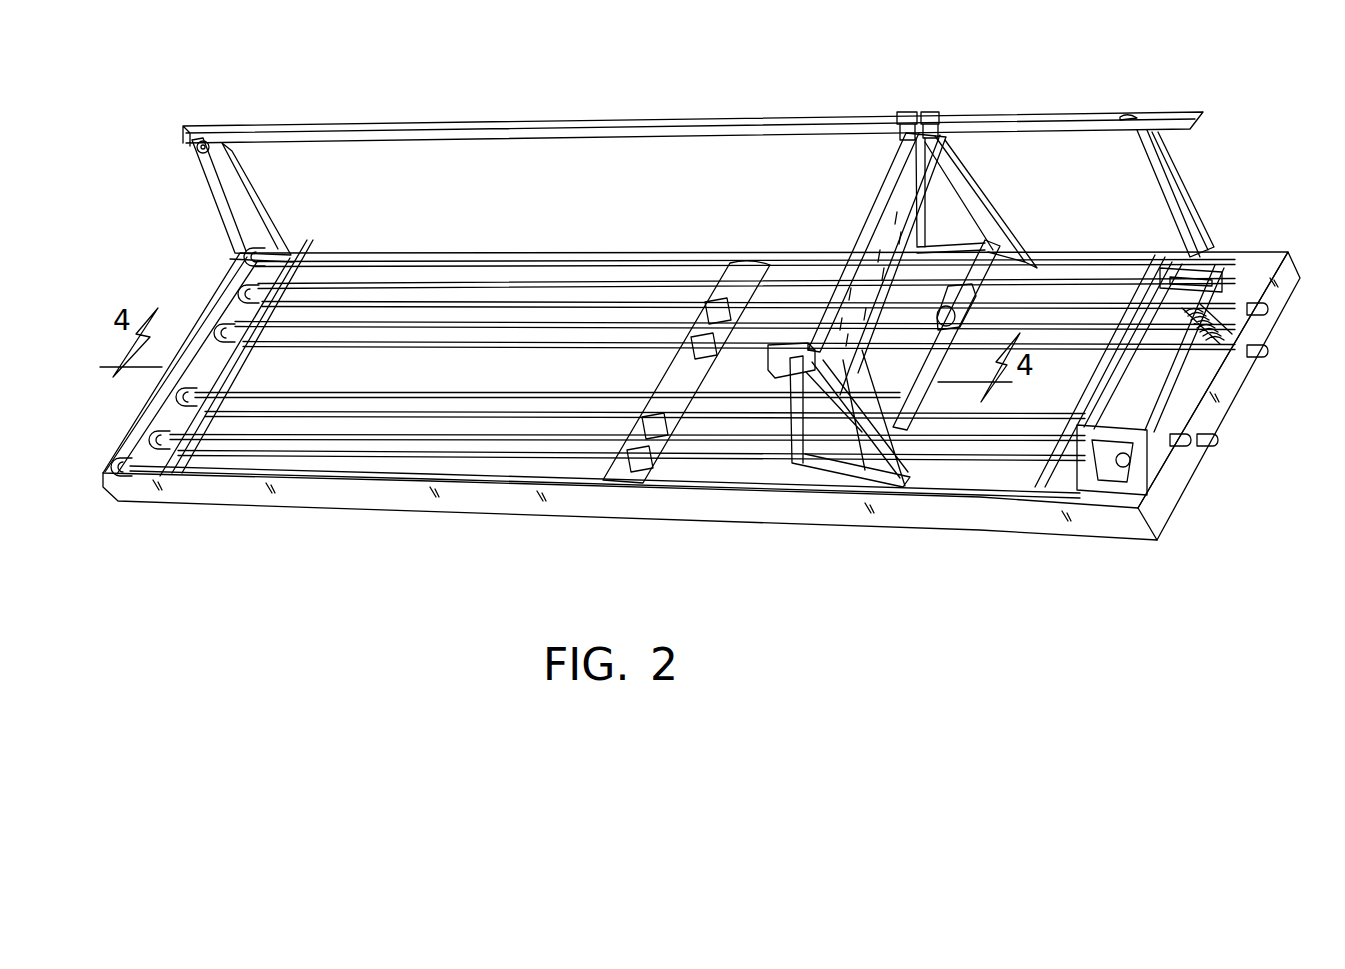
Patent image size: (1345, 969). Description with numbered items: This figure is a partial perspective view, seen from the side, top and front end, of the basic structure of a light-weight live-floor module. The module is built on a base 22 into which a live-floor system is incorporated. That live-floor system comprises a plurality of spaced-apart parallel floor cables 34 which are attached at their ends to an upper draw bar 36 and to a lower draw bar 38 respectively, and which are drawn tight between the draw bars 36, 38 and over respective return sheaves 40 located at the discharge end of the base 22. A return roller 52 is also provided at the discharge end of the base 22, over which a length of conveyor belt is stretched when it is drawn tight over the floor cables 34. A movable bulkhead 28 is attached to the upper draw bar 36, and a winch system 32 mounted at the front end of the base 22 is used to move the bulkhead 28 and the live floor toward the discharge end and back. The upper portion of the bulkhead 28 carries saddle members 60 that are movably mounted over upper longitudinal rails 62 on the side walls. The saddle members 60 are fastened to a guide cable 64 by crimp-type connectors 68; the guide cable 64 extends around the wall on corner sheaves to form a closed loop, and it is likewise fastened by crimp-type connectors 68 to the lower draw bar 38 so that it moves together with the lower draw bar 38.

The base 22 is at (744, 510).
The movable bulkhead 28 is at (868, 208).
The winch system 32 is at (1180, 372).
The floor cables 34 is at (400, 207).
The upper draw bar 36 is at (992, 250).
The lower draw bar 38 is at (746, 283).
The return sheaves 40 is at (150, 423).
The return roller 52 is at (210, 300).
The saddle members 60 is at (922, 112).
The upper longitudinal rails 62 is at (1153, 112).
The guide cable 64 is at (220, 198).
The crimp-type connectors 68 is at (902, 114).